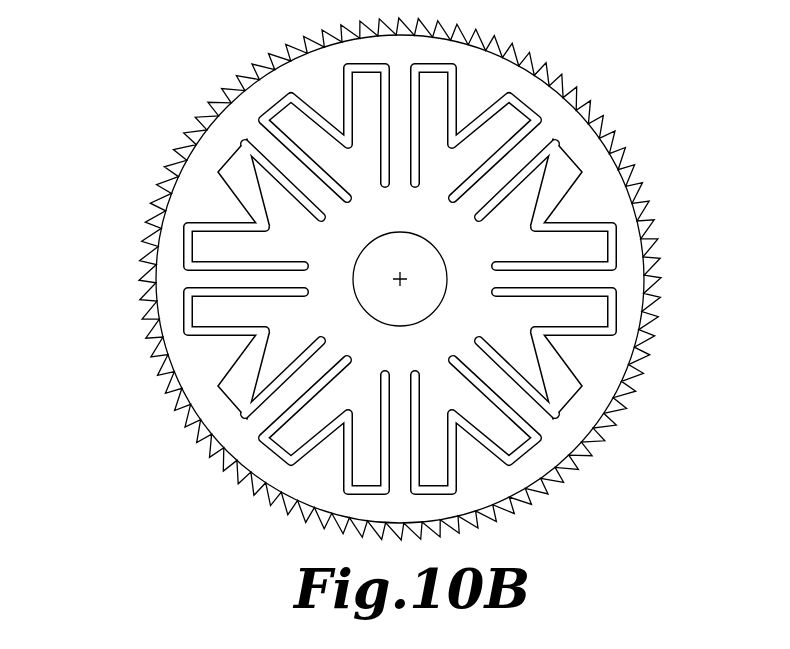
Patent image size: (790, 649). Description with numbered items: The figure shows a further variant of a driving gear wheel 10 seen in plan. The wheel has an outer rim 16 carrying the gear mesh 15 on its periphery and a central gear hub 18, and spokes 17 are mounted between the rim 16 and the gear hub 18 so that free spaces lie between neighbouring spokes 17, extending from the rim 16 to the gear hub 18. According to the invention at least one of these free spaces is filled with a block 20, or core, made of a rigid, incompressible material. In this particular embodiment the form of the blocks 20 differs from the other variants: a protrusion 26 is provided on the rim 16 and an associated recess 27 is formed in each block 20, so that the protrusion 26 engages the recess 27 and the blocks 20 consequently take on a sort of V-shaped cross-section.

The driving gear wheel 10 is at (404, 284).
The gear mesh 15 is at (241, 75).
The rim 16 is at (496, 72).
The spokes 17 is at (510, 175).
The gear hub 18 is at (473, 317).
The block 20 is at (243, 166).
The protrusion 26 is at (221, 347).
The recess 27 is at (218, 363).